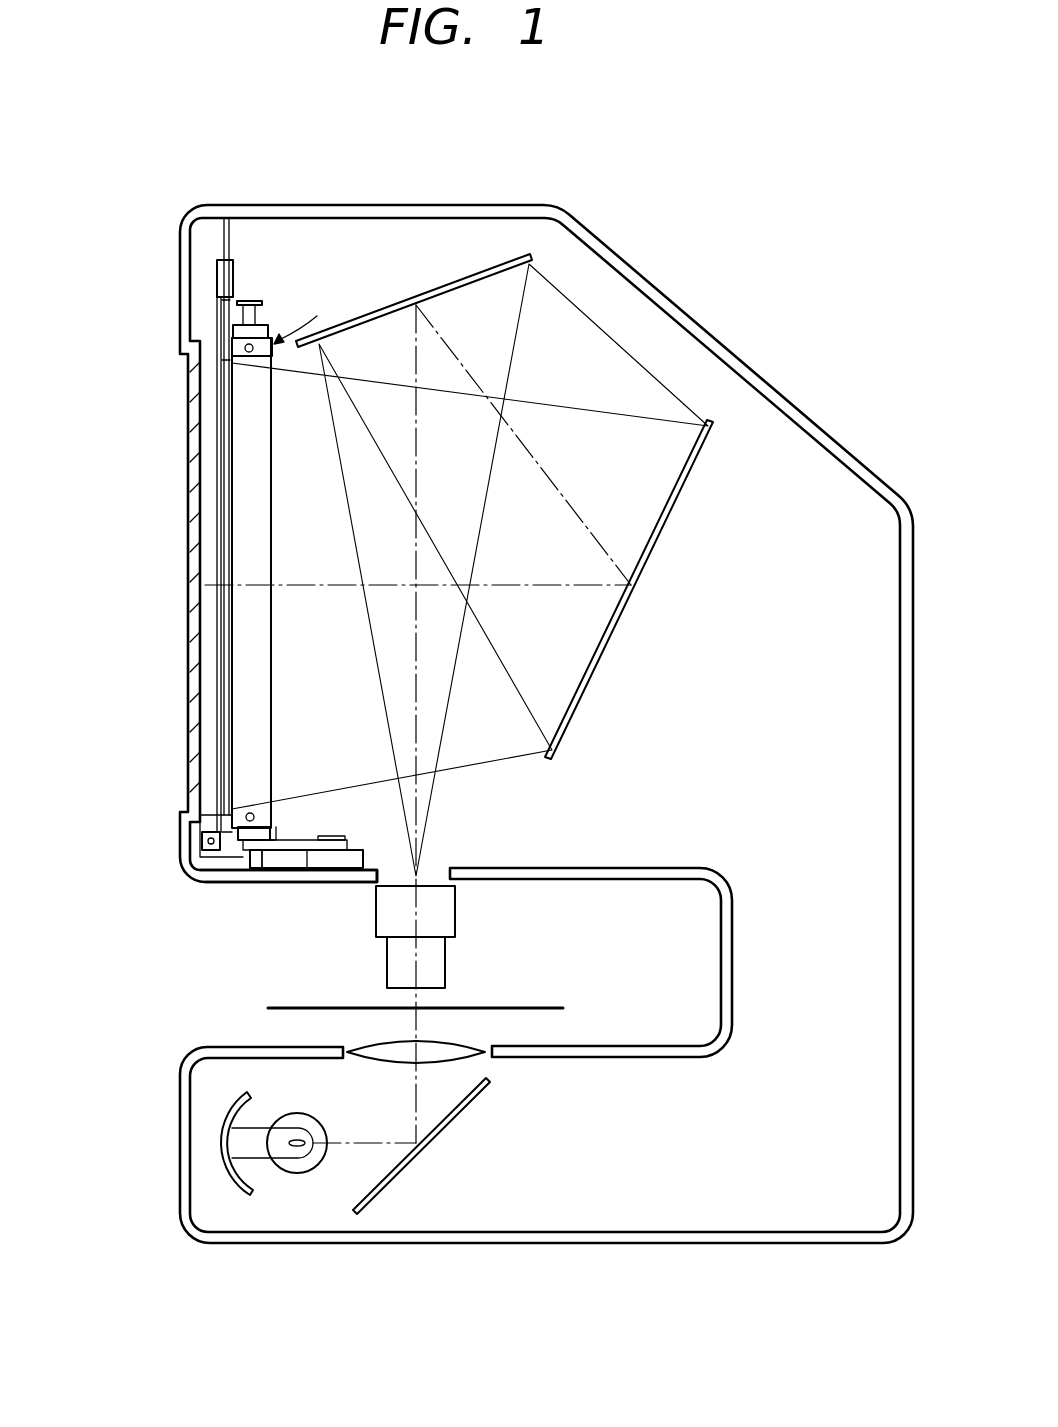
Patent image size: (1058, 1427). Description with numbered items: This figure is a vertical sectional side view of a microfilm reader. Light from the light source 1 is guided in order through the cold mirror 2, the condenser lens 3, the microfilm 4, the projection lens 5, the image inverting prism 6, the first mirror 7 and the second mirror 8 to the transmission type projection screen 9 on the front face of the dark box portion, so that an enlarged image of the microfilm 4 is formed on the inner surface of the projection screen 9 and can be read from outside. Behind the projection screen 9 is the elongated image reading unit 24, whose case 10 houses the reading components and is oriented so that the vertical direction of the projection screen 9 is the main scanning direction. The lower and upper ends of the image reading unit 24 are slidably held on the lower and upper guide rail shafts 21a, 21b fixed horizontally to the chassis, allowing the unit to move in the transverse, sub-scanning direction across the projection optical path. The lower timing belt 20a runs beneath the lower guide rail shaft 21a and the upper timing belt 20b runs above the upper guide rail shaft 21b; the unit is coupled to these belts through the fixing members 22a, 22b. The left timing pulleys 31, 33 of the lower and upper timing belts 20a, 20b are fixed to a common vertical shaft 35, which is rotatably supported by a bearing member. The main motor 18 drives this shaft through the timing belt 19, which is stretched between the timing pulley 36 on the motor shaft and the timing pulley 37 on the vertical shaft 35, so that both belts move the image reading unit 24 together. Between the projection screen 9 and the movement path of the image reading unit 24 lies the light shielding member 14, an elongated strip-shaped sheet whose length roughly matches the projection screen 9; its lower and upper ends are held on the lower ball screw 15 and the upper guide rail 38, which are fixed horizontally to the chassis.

The light source 1 is at (320, 1125).
The cold mirror 2 is at (470, 1110).
The condenser lens 3 is at (470, 1046).
The microfilm 4 is at (545, 1007).
The projection lens 5 is at (445, 960).
The image inverting prism 6 is at (455, 912).
The first mirror 7 is at (462, 290).
The second mirror 8 is at (685, 497).
The transmission type projection screen 9 is at (196, 462).
The case 10 is at (260, 498).
The light shielding member 14 is at (219, 402).
The lower ball screw 15 is at (198, 845).
The main motor 18 is at (330, 875).
The timing belt 19 is at (283, 856).
The lower timing belt 20a is at (282, 830).
The upper timing belt 20b is at (270, 335).
The lower guide rail shaft 21a is at (246, 814).
The upper guide rail shaft 21b is at (244, 348).
The fixing member 22a is at (232, 820).
The fixing member 22b is at (232, 330).
The image reading unit 24 is at (307, 317).
The left timing pulley 31 is at (273, 828).
The left timing pulley 33 is at (258, 328).
The vertical shaft 35 is at (250, 302).
The timing pulley 36 is at (340, 838).
The timing pulley 37 is at (214, 848).
The upper guide rail 38 is at (222, 245).